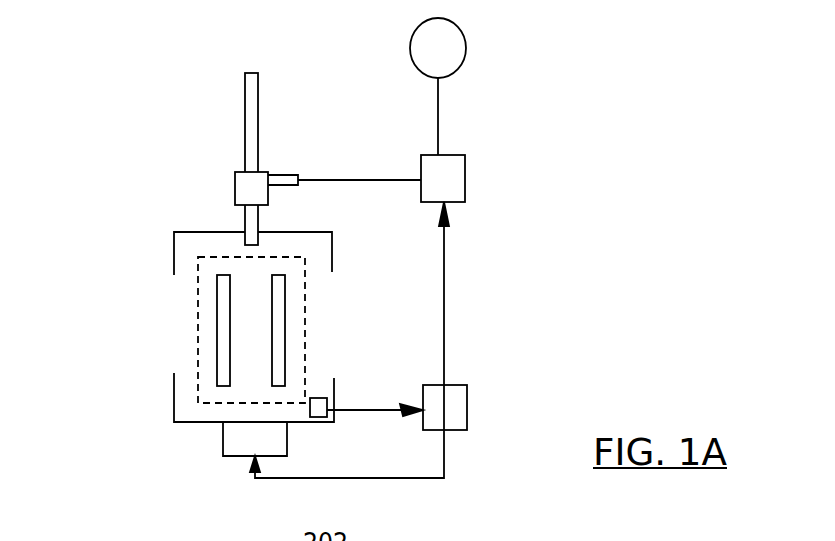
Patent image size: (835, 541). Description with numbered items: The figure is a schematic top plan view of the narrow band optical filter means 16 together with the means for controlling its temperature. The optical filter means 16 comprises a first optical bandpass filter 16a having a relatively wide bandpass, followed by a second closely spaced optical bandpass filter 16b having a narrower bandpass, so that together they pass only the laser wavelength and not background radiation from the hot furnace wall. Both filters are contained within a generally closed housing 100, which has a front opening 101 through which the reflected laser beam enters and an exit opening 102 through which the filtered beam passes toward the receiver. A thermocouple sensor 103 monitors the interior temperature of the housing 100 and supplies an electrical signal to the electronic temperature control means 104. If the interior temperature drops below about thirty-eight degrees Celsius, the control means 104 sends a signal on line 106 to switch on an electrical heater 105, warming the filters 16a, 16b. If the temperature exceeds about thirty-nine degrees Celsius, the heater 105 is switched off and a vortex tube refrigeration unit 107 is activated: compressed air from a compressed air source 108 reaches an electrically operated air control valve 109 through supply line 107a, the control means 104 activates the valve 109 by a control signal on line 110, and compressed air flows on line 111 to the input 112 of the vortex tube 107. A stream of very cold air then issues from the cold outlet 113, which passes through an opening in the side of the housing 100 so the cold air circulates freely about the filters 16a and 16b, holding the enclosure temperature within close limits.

The optical filter means 16 is at (228, 335).
The first optical bandpass filter 16a is at (225, 352).
The second optical bandpass filter 16b is at (280, 363).
The housing 100 is at (173, 232).
The front opening 101 is at (183, 326).
The exit opening 102 is at (323, 323).
The thermocouple sensor 103 is at (320, 415).
The electronic temperature control means 104 is at (465, 407).
The electrical heater 105 is at (228, 452).
The line 106 is at (383, 478).
The vortex tube refrigeration unit 107 is at (245, 101).
The stem 107a is at (438, 110).
The compressed air source 108 is at (415, 35).
The air control valve 109 is at (462, 173).
The line 110 is at (444, 288).
The line 111 is at (338, 180).
The input 112 is at (275, 175).
The cold outlet 113 is at (247, 247).